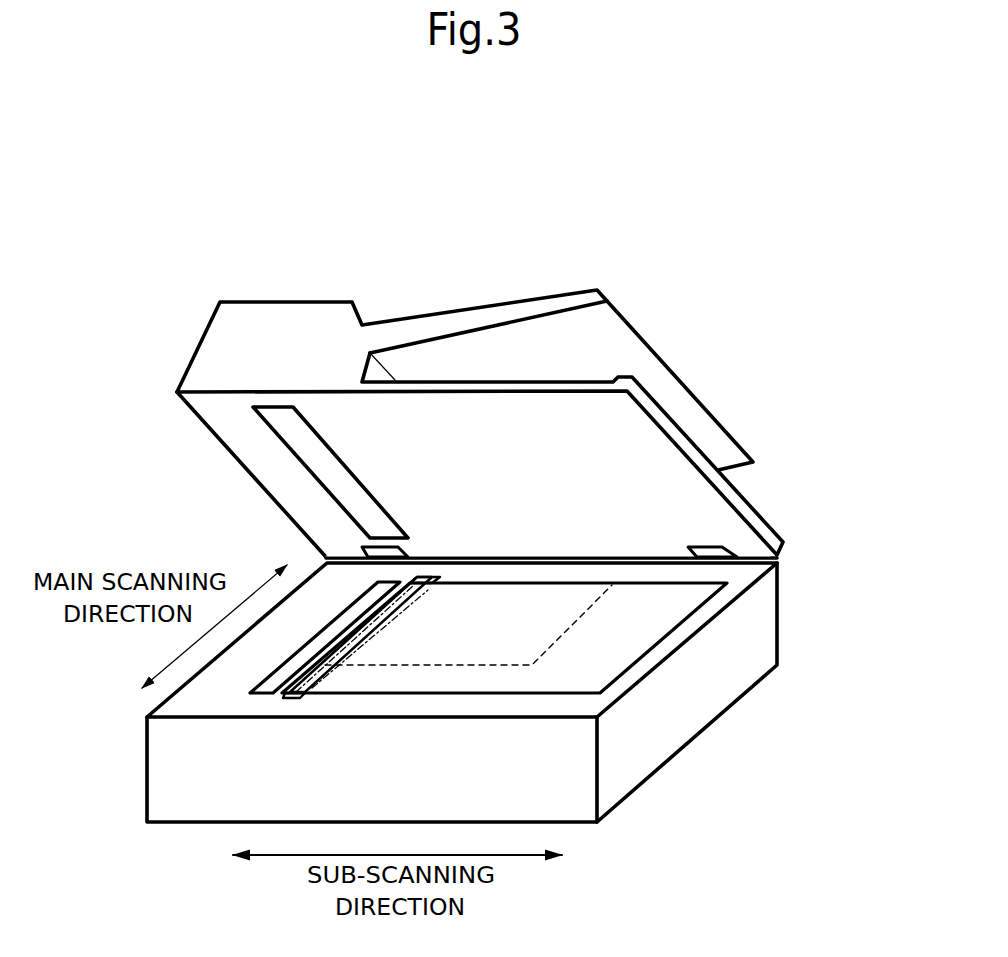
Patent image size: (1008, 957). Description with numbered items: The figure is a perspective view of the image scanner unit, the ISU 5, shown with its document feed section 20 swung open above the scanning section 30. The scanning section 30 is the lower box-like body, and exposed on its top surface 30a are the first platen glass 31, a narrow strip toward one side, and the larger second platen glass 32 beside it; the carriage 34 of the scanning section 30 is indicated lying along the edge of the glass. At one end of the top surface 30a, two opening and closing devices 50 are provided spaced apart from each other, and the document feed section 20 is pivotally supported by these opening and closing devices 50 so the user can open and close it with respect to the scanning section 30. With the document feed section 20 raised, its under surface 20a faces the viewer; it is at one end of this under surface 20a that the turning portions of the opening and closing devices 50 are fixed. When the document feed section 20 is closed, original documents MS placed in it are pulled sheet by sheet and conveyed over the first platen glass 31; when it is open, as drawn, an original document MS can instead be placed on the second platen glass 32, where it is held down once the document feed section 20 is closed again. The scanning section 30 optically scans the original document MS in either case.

The ISU 5 is at (454, 256).
The document feed section 20 is at (776, 376).
The under surface of the document feed section 20a is at (632, 438).
The opening and closing device 50 is at (362, 547).
The scanning section 30 is at (746, 746).
The top surface of the scanning section 30a is at (738, 580).
The first platen glass 31 is at (260, 693).
The second platen glass 32 is at (625, 637).
The carriage 34 is at (287, 703).
The original document MS is at (472, 667).